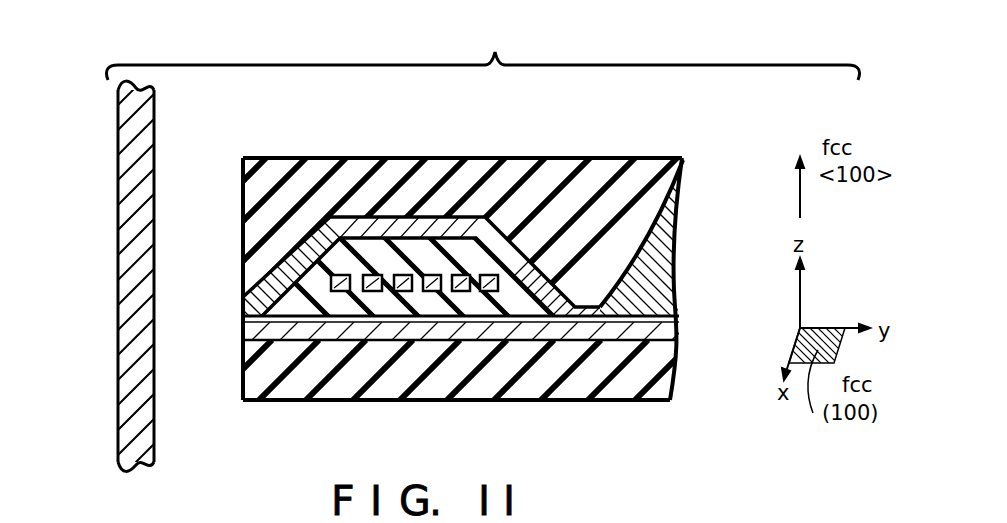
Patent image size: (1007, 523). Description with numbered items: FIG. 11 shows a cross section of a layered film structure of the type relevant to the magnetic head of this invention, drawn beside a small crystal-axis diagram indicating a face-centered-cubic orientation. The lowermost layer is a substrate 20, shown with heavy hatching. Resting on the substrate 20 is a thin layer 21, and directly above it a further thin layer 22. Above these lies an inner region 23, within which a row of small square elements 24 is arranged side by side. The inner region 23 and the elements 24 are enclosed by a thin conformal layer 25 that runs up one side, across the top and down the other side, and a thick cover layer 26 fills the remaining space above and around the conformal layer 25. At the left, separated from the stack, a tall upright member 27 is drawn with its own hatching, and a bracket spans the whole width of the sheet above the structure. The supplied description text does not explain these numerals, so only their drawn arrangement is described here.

The substrate 20 is at (673, 360).
The first thin layer 21 is at (245, 333).
The second thin layer 22 is at (245, 318).
The inner body region 23 is at (307, 303).
The embedded elements 24 is at (346, 297).
The conformal thin layer 25 is at (247, 300).
The top cover layer 26 is at (684, 163).
The side member 27 is at (154, 420).